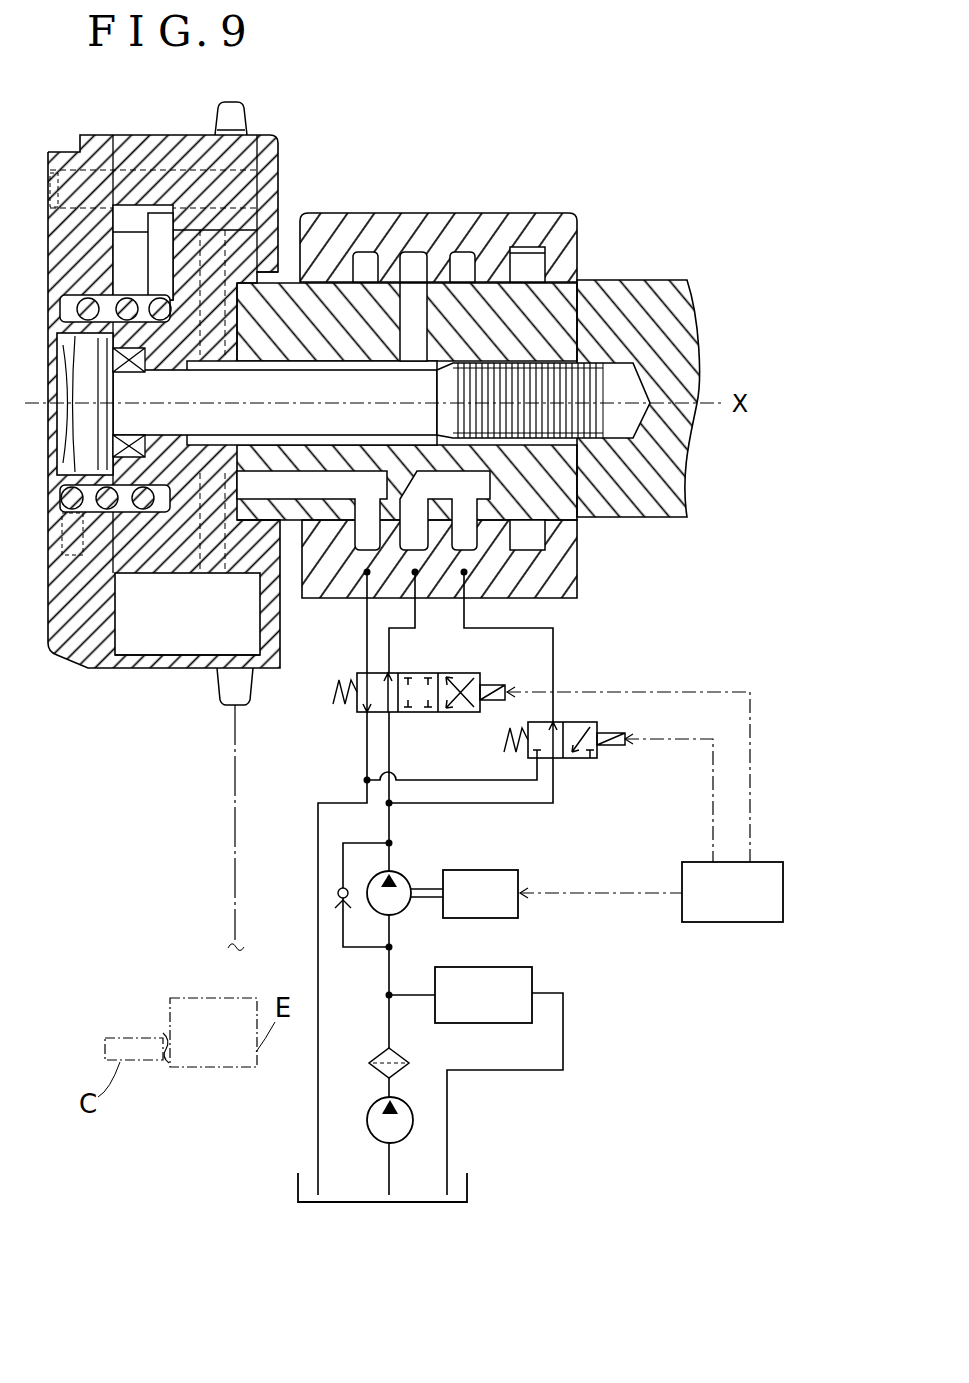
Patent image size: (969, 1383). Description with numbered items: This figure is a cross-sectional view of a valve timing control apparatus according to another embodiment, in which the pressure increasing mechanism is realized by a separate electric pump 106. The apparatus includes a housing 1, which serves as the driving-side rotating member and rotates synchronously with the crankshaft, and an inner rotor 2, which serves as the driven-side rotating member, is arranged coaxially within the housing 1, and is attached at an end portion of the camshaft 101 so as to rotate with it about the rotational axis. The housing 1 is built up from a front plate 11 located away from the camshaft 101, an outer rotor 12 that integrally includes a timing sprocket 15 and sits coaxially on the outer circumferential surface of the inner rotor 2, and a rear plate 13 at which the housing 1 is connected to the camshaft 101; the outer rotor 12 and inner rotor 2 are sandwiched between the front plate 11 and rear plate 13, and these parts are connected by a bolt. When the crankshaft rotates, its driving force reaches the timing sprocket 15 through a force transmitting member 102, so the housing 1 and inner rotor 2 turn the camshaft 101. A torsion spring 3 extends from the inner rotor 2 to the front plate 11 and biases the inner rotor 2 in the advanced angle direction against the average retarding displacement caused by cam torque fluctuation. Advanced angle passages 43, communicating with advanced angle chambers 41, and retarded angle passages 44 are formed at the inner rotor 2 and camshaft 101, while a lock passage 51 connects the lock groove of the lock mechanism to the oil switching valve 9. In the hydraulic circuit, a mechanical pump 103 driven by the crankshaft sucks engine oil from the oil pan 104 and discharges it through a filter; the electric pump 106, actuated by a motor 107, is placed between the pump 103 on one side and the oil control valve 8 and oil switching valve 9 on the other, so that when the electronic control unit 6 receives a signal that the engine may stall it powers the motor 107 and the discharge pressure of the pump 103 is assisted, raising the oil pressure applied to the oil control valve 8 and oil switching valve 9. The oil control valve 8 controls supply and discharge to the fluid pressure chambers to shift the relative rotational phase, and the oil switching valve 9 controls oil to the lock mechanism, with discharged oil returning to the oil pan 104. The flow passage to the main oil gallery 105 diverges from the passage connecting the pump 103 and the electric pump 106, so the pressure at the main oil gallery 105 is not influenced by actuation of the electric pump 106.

The housing 1 is at (122, 127).
The inner rotor 2 is at (297, 118).
The torsion spring 3 is at (60, 304).
The ECU 6 is at (734, 922).
The oil control valve (OCV) 8 is at (420, 713).
The oil switching valve (OSV) 9 is at (580, 758).
The front plate 11 is at (50, 640).
The outer rotor 12 is at (173, 133).
The rear plate 13 is at (279, 165).
The timing sprocket 15 is at (250, 695).
The advanced angle chamber 41 is at (167, 633).
The advanced angle passage 43 is at (422, 597).
The retarded angle passage 44 is at (170, 578).
The lock passage 51 is at (471, 596).
The camshaft 101 is at (648, 280).
The force transmitting member 102 is at (233, 848).
The pump 103 is at (414, 1120).
The oil pan 104 is at (298, 1190).
The main oil gallery 105 is at (500, 967).
The electric pump 106 is at (402, 873).
The motor 107 is at (506, 870).